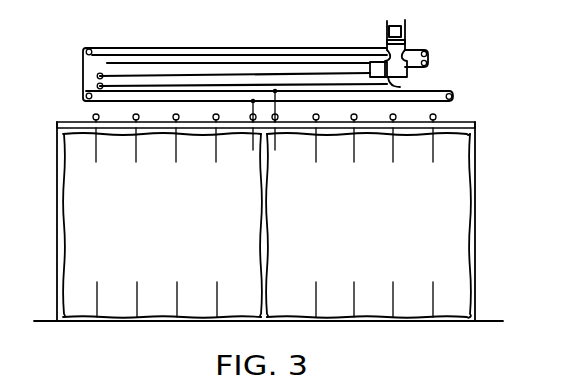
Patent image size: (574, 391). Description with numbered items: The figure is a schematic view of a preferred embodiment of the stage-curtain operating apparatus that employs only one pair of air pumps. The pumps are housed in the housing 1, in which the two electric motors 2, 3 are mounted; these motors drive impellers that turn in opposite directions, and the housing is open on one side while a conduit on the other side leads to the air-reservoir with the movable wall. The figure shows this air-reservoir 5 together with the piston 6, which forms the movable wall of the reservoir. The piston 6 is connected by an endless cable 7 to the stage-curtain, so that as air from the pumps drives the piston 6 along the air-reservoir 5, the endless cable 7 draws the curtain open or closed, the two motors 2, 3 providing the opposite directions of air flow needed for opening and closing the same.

The housing 1 is at (407, 39).
The electric motor 2 is at (385, 24).
The electric motor 3 is at (387, 45).
The air-reservoir 5 is at (178, 68).
The piston 6 is at (400, 56).
The endless cable 7 is at (83, 76).